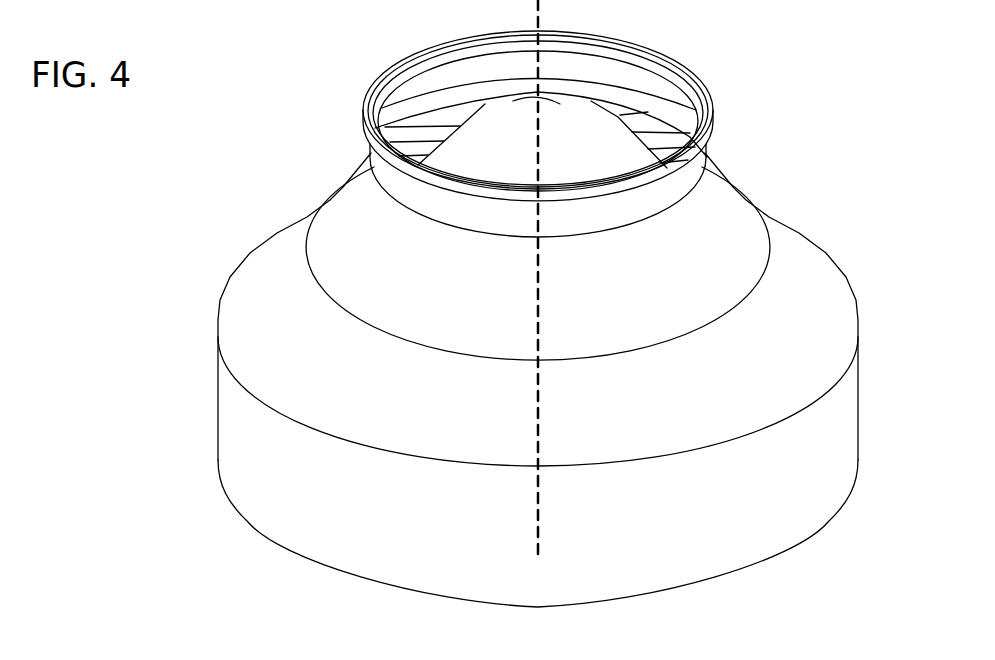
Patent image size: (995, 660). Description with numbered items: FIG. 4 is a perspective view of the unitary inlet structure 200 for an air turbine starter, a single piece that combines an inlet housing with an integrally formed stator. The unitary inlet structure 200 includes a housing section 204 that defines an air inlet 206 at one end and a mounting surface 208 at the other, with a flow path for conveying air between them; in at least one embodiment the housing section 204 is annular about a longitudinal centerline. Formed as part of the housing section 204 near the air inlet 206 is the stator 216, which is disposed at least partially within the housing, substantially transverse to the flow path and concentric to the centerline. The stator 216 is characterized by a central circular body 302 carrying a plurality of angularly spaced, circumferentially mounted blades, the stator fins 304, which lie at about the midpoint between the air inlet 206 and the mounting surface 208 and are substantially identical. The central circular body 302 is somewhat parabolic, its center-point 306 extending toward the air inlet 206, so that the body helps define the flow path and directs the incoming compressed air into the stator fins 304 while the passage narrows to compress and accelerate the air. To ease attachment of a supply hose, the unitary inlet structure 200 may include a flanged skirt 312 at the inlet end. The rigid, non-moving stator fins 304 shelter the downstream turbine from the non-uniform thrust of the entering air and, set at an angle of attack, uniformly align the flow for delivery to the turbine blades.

The unitary inlet structure 200 is at (216, 189).
The housing section 204 is at (741, 197).
The air inlet 206 is at (653, 67).
The mounting surface 208 is at (760, 565).
The stator 216 is at (462, 119).
The central circular body 302 is at (508, 170).
The stator fins 304 is at (396, 140).
The center-point 306 is at (540, 102).
The flanged skirt 312 is at (717, 106).